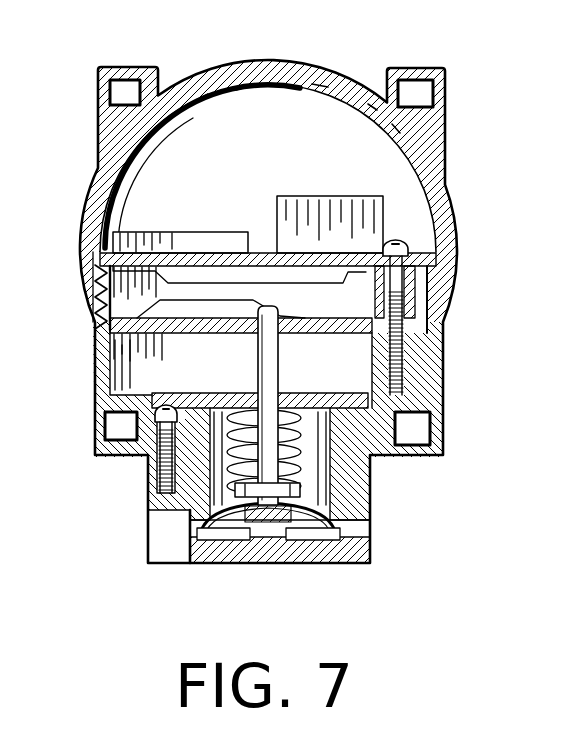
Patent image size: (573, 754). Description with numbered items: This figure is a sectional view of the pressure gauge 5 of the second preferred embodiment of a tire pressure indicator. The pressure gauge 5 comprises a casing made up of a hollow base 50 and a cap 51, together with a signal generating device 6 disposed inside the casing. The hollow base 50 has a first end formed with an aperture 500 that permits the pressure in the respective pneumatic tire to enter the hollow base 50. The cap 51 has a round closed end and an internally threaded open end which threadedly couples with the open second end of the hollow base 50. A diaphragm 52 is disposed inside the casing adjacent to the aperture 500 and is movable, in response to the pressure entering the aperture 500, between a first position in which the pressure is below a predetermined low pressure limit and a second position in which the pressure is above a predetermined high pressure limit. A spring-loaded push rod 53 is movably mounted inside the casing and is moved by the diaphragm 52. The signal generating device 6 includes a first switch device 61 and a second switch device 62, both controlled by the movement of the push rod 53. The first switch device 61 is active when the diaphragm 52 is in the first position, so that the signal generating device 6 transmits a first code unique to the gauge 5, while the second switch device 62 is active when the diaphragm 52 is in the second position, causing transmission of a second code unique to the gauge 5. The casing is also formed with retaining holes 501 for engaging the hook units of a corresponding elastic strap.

The pressure gauge 5 is at (474, 122).
The hollow base 50 is at (443, 392).
The aperture 500 is at (297, 563).
The retaining holes 501 is at (104, 430).
The cap 51 is at (336, 74).
The diaphragm 52 is at (228, 562).
The spring-loaded push rod 53 is at (262, 355).
The signal generating device 6 is at (261, 180).
The first switch device 61 is at (92, 332).
The second switch device 62 is at (83, 268).